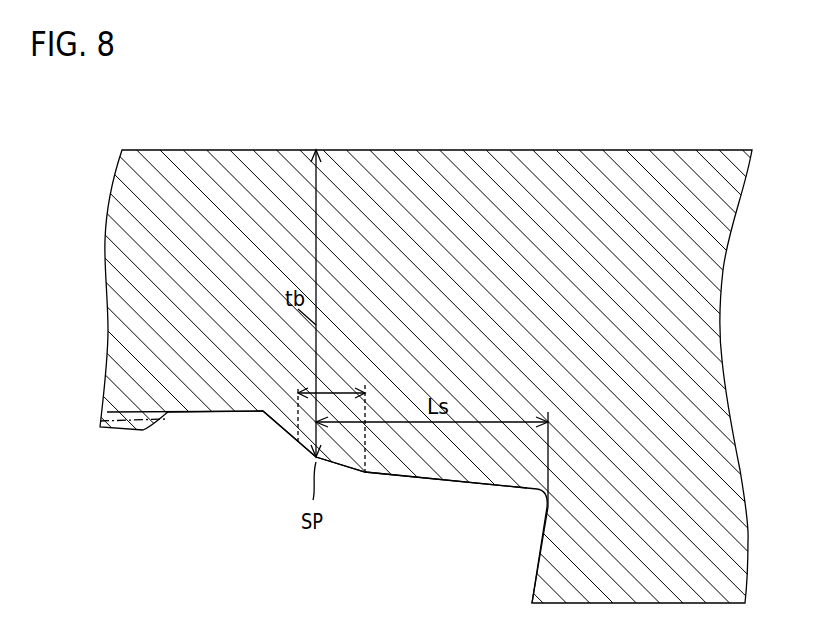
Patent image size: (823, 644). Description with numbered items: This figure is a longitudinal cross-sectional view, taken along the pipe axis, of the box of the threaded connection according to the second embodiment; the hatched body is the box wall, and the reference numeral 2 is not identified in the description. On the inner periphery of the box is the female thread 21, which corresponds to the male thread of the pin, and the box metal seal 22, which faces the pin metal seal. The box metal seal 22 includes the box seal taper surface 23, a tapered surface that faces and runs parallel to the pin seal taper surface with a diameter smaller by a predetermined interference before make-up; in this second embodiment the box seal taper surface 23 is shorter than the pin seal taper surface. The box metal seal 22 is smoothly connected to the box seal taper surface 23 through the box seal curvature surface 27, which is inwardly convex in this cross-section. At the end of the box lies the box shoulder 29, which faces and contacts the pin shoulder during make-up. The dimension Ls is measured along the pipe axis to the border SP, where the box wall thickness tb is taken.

The cylinder head 2 is at (668, 150).
The female thread 21 is at (124, 433).
The box metal seal 22 is at (340, 390).
The box seal taper surface 23 is at (340, 464).
The box seal curvature surface 27 is at (310, 453).
The box shoulder 29 is at (540, 557).